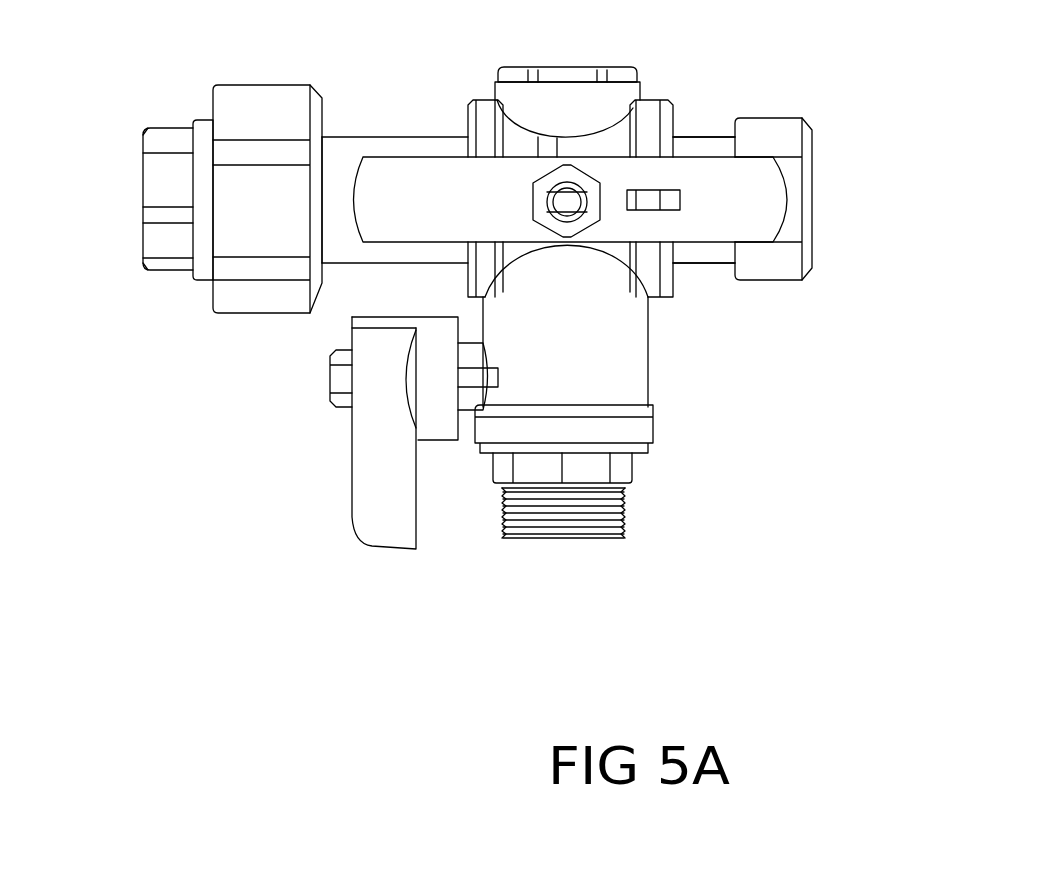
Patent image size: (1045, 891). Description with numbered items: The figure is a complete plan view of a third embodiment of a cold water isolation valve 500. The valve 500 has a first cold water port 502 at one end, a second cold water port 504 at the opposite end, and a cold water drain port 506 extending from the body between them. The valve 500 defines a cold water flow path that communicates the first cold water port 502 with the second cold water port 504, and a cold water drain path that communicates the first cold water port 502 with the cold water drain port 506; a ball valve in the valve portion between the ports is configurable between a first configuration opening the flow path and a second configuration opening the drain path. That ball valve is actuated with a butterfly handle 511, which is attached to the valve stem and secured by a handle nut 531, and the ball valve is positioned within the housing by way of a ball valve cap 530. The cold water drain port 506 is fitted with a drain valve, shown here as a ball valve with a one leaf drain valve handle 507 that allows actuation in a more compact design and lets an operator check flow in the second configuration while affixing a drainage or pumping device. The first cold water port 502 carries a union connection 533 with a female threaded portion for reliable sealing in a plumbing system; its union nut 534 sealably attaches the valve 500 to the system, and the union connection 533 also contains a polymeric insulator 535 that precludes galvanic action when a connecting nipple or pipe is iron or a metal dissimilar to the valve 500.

The cold water isolation valve 500 is at (792, 337).
The first cold water port 502 is at (138, 200).
The second cold water port 504 is at (812, 197).
The cold water drain port 506 is at (558, 537).
The drain valve handle 507 is at (377, 500).
The butterfly handle 511 is at (755, 173).
The ball valve cap 530 is at (627, 72).
The handle nut 531 is at (600, 208).
The union connection 533 is at (165, 265).
The union nut 534 is at (258, 307).
The insulator 535 is at (205, 117).